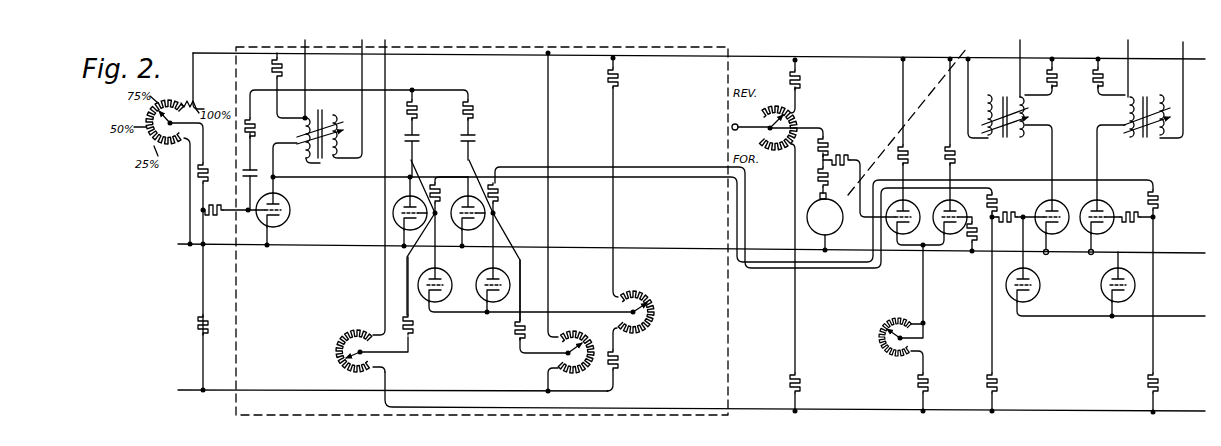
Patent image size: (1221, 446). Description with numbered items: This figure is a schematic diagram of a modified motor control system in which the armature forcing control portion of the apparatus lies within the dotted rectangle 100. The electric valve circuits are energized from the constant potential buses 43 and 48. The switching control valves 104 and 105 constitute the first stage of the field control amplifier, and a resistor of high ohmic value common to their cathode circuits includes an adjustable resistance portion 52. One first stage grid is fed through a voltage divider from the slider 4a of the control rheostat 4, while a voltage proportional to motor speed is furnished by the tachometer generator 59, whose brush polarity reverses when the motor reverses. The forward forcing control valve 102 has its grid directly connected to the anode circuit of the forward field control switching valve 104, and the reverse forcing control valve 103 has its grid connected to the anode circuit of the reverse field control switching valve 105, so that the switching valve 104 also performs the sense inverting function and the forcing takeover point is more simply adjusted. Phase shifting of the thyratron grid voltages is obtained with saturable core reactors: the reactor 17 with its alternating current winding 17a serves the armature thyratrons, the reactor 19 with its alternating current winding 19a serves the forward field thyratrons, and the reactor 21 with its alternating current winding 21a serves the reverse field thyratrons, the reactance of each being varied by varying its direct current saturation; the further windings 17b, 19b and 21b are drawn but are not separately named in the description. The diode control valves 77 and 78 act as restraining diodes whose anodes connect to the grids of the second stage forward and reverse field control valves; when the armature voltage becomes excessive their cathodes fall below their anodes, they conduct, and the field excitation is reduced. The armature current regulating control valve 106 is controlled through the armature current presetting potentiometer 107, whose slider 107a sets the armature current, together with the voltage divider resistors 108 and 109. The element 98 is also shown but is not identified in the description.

The dotted rectangle 100 is at (237, 46).
The armature current presetting potentiometer 107 is at (174, 148).
The slider of armature current presetting potentiometer 107a is at (180, 97).
The voltage divider resistor 108 is at (211, 183).
The voltage divider resistor 109 is at (207, 323).
The armature current regulating control valve 106 is at (288, 222).
The saturable core type reactor 17 is at (314, 108).
The alternating current winding of reactor 17 17a is at (337, 118).
The transformer primary winding 17b is at (297, 137).
The forward forcing control valve 102 is at (400, 200).
The reverse forcing control valve 103 is at (458, 230).
The control rheostat 4 is at (766, 235).
The slider of control rheostat 4a is at (779, 122).
The resistor 98 is at (821, 160).
The tachometer generator 59 is at (834, 221).
The constant potential bus 43 is at (871, 61).
The constant potential bus 48 is at (867, 411).
The adjustable resistance portion 52 is at (903, 364).
The forward field control switching valve 104 is at (920, 206).
The reverse field control switching valve 105 is at (965, 206).
The saturable core type reactor 19 is at (1019, 120).
The alternating current winding of reactor 19 19a is at (990, 95).
The transformer winding 19b is at (1030, 114).
The saturable core type reactor 21 is at (1135, 120).
The alternating current winding of reactor 21 21a is at (1160, 96).
The transformer winding 21b is at (1124, 114).
The diode control valve 77 is at (1040, 280).
The diode control valve 78 is at (1103, 285).